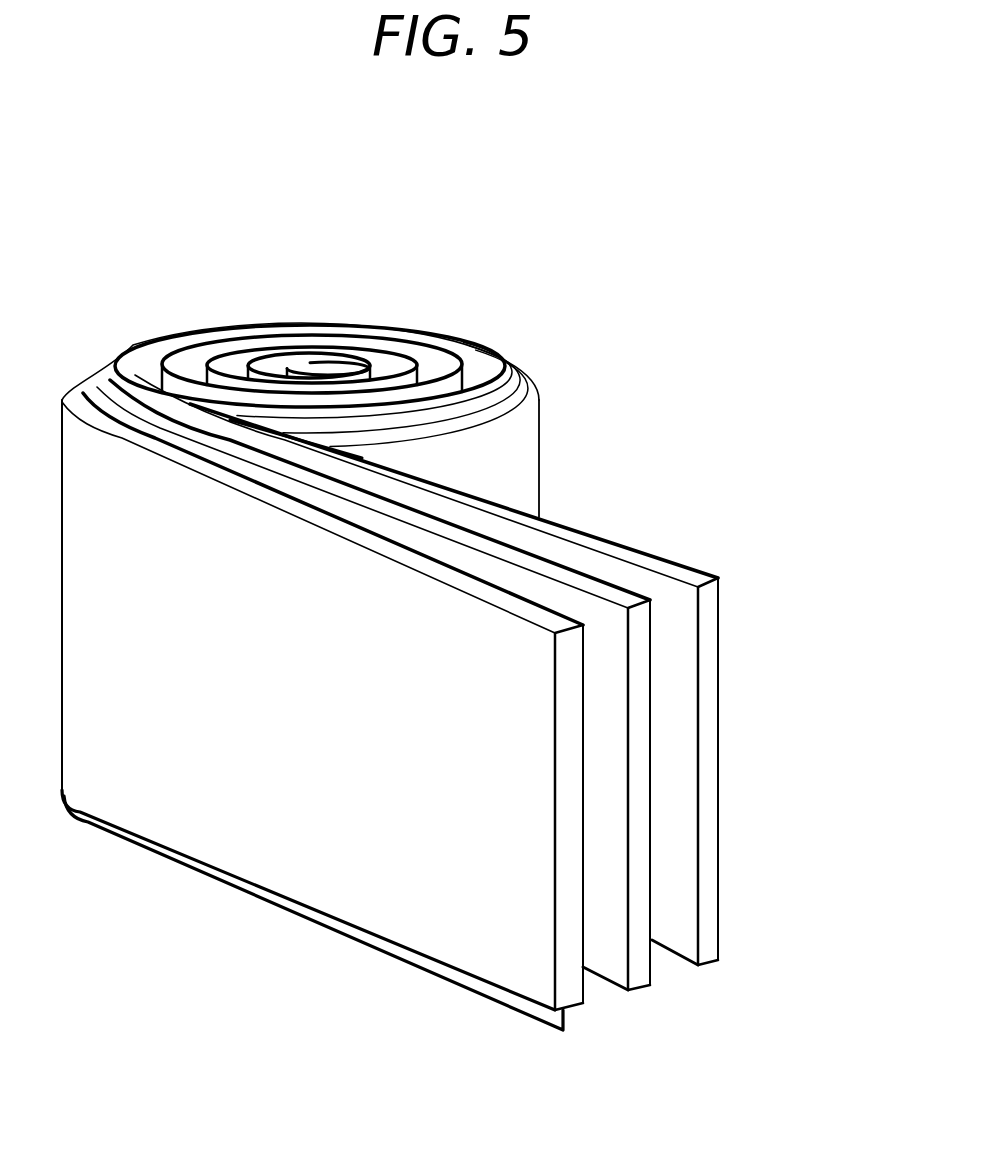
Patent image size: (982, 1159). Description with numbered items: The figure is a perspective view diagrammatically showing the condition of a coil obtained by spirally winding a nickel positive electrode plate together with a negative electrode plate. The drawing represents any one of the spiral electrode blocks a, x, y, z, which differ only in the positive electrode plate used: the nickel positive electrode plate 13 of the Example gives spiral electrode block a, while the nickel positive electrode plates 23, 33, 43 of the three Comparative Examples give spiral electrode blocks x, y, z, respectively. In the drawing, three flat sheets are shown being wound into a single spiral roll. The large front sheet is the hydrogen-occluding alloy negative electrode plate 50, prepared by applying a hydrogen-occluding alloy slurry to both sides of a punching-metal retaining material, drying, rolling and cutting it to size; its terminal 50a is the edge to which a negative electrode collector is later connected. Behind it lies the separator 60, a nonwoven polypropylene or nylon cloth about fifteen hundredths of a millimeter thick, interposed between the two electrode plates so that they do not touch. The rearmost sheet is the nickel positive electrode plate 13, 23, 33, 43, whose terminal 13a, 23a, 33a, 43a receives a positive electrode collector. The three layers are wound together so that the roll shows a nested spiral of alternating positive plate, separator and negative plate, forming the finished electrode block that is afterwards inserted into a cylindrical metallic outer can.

The nickel positive electrode plate 13 is at (499, 670).
The nickel positive electrode plate 23 is at (499, 670).
The nickel positive electrode plate 33 is at (499, 670).
The nickel positive electrode plate 43 is at (673, 717).
The terminal 13a is at (426, 481).
The terminal 23a is at (426, 481).
The terminal 33a is at (426, 481).
The terminal 43a is at (612, 547).
The hydrogen-occluding alloy negative electrode plate 50 is at (197, 828).
The terminal 50a is at (483, 987).
The separator 60 is at (622, 602).
The spiral electrode block a is at (343, 345).
The spiral electrode block x is at (343, 345).
The spiral electrode block y is at (343, 345).
The spiral electrode block z is at (462, 298).